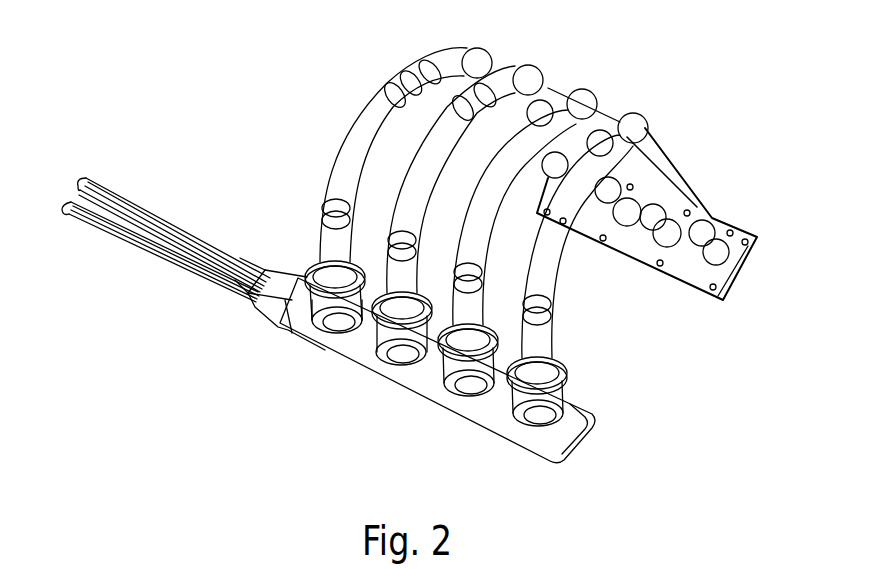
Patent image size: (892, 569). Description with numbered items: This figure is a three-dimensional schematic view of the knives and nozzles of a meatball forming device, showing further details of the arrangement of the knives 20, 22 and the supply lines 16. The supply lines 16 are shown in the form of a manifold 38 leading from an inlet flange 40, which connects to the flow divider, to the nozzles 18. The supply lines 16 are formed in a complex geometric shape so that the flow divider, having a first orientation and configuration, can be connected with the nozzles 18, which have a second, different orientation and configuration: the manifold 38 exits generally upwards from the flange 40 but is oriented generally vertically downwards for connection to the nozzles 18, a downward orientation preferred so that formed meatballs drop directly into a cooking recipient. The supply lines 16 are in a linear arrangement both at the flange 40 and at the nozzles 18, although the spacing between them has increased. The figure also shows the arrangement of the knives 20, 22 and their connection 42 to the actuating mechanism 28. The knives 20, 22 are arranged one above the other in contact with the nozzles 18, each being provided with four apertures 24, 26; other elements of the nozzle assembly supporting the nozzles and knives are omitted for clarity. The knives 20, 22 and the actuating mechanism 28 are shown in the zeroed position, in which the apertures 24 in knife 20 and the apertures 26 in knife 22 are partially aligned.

The supply lines 16 is at (688, 190).
The nozzle 18 is at (493, 343).
The knife 20 is at (621, 413).
The knife 22 is at (480, 389).
The apertures 24 is at (268, 327).
The apertures 26 is at (286, 360).
The actuating mechanism 28 is at (145, 240).
The manifold 38 is at (472, 187).
The inlet flange 40 is at (779, 239).
The connection 42 is at (206, 223).